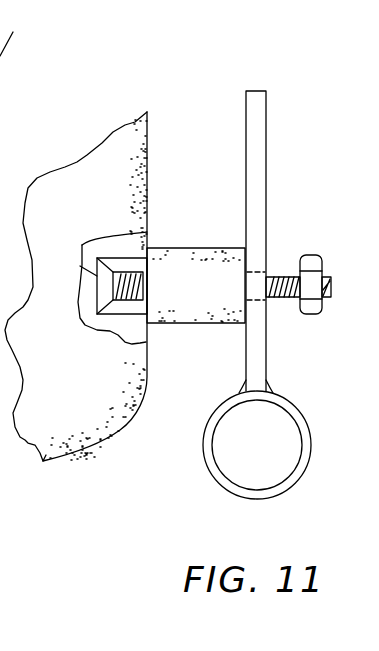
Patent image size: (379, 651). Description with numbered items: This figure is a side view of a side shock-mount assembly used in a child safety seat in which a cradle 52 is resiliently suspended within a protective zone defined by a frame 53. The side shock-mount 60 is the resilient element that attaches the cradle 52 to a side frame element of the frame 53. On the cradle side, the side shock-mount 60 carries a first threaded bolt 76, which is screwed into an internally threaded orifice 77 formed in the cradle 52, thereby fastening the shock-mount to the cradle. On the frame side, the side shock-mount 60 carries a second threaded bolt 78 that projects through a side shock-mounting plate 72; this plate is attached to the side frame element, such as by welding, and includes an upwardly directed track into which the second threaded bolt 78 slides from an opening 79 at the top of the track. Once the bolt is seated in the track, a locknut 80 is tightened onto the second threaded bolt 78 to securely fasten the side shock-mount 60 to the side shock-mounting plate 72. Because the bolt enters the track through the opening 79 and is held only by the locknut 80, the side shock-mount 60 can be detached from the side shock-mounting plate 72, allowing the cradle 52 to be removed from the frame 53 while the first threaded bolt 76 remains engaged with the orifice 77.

The cradle 52 is at (78, 405).
The frame 53 is at (310, 465).
The side shock-mount 60 is at (200, 313).
The side shock-mounting plate 72 is at (266, 364).
The first threaded bolt 76 is at (132, 284).
The internally threaded orifice 77 is at (82, 245).
The second threaded bolt 78 is at (280, 272).
The opening 79 is at (248, 88).
The locknut 80 is at (310, 314).